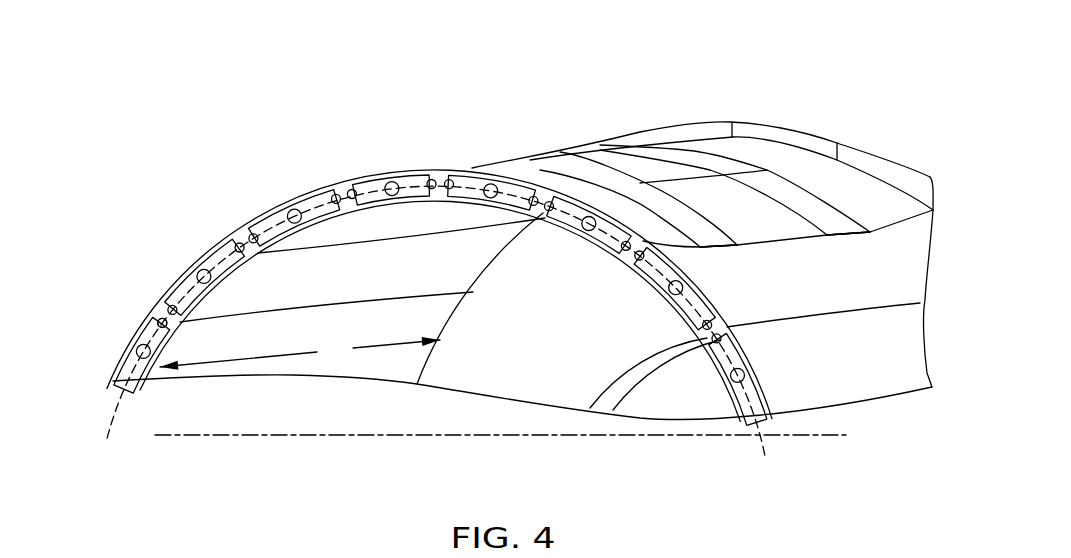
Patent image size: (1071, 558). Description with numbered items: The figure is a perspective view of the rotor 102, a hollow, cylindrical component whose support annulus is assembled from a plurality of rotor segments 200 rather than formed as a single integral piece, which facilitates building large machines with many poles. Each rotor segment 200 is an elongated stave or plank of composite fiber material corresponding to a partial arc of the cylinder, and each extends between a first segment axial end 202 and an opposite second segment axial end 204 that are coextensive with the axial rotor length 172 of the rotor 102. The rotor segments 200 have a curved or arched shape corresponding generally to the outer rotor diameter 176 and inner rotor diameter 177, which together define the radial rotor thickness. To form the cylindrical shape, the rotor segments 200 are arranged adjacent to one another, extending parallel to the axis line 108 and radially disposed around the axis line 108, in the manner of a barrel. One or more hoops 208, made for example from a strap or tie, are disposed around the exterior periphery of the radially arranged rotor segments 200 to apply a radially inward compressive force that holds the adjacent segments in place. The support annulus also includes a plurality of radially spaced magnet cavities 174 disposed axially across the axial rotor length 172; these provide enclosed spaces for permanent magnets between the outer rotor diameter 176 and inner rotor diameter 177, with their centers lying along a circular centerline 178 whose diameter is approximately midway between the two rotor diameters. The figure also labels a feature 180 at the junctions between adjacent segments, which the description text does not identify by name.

The rotor 102 is at (686, 61).
The axis line 108 is at (797, 438).
The axial rotor length 172 is at (300, 352).
The magnet cavities 174 is at (275, 222).
The outer rotor diameter 176 is at (240, 296).
The inner rotor diameter 177 is at (186, 240).
The circular centerline 178 is at (102, 420).
The segment joint 180 is at (450, 172).
The rotor segments 200 is at (703, 192).
The first segment axial end 202 is at (162, 312).
The second segment axial end 204 is at (780, 126).
The hoops 208 is at (733, 248).